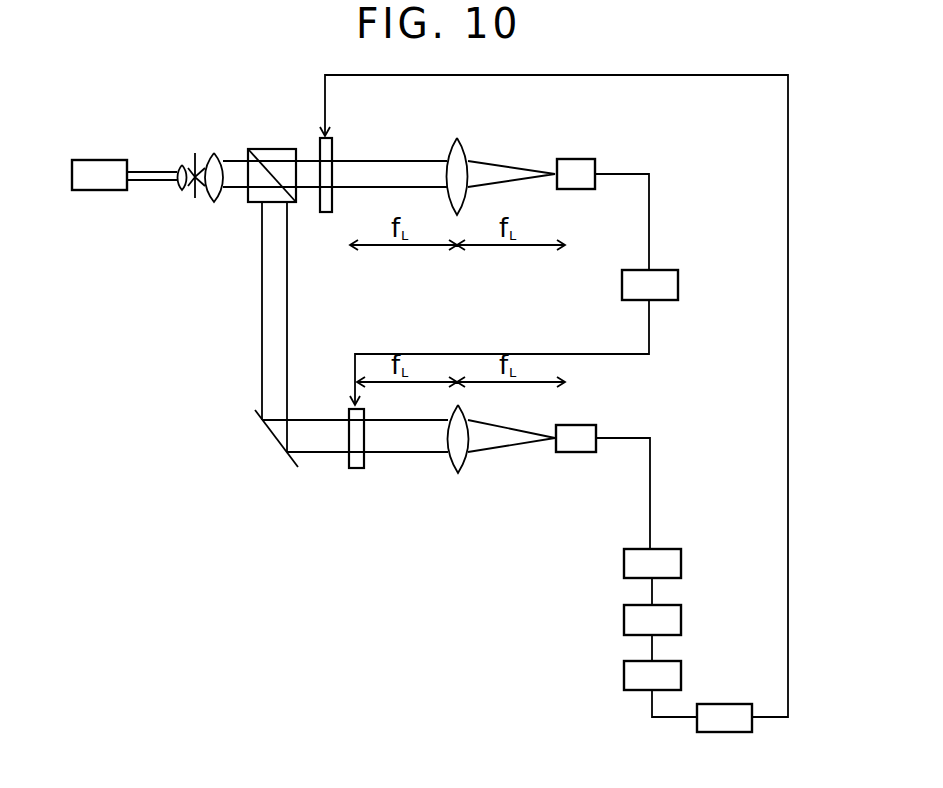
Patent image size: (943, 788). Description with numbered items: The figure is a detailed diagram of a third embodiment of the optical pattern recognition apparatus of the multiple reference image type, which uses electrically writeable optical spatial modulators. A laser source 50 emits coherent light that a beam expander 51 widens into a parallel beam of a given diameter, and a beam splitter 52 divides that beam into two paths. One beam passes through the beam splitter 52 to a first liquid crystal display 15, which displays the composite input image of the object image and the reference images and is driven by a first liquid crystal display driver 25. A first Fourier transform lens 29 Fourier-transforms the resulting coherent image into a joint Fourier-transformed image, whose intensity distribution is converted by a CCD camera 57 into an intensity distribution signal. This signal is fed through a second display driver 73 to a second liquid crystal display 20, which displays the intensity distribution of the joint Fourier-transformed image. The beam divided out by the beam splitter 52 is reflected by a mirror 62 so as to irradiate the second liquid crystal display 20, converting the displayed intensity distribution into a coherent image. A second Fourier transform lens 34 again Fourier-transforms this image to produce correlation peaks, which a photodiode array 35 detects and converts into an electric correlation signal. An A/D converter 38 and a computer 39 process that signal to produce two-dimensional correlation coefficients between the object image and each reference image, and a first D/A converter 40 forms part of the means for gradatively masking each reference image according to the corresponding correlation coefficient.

The laser source 50 is at (93, 160).
The beam expander 51 is at (222, 141).
The beam splitter 52 is at (270, 148).
The first liquid crystal display 15 is at (328, 150).
The first Fourier transform lens 29 is at (460, 148).
The CCD camera 57 is at (580, 158).
The second display driver 73 is at (660, 272).
The mirror 62 is at (275, 438).
The second liquid crystal display 20 is at (358, 470).
The second Fourier transform lens 34 is at (457, 463).
The photodiode array 35 is at (577, 452).
The A/D converter 38 is at (624, 565).
The computer 39 is at (624, 623).
The first D/A converter 40 is at (624, 677).
The first liquid crystal display driver 25 is at (727, 703).